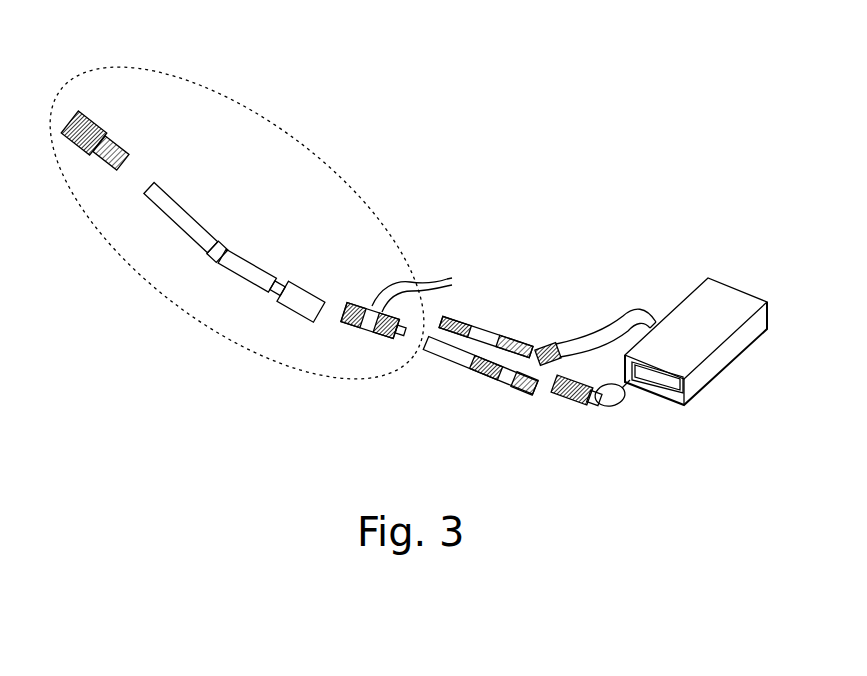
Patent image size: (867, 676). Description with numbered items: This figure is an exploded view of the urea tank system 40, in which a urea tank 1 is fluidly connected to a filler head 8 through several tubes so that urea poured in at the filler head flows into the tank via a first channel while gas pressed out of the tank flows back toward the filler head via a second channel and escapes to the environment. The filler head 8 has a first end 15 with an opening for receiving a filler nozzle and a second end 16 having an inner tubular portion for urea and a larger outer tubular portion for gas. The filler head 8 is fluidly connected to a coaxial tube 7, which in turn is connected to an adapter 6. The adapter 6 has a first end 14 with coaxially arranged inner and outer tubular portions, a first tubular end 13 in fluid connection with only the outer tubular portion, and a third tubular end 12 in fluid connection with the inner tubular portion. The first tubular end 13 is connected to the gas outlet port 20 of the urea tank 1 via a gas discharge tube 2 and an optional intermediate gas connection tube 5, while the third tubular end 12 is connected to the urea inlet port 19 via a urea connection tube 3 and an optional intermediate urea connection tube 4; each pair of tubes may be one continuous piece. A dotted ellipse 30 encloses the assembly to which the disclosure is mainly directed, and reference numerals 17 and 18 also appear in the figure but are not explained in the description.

The urea tank 1 is at (715, 300).
The gas discharge tube 2 is at (603, 325).
The urea connection tube 3 is at (602, 412).
The intermediate urea connection tube 4 is at (466, 368).
The intermediate gas connection tube 5 is at (485, 318).
The adapter 6 is at (426, 290).
The coaxial tube 7 is at (240, 256).
The filler head 8 is at (107, 132).
The third tubular end 12 is at (394, 338).
The first tubular end 13 is at (452, 282).
The first end 14 is at (346, 304).
The first end 15 is at (78, 122).
The second end 16 is at (128, 172).
The rod end 17 is at (150, 184).
The end cap 18 is at (320, 318).
The urea inlet port 19 is at (628, 382).
The gas outlet port 20 is at (658, 308).
The kit boundary 30 is at (293, 140).
The urea tank system 40 is at (207, 377).